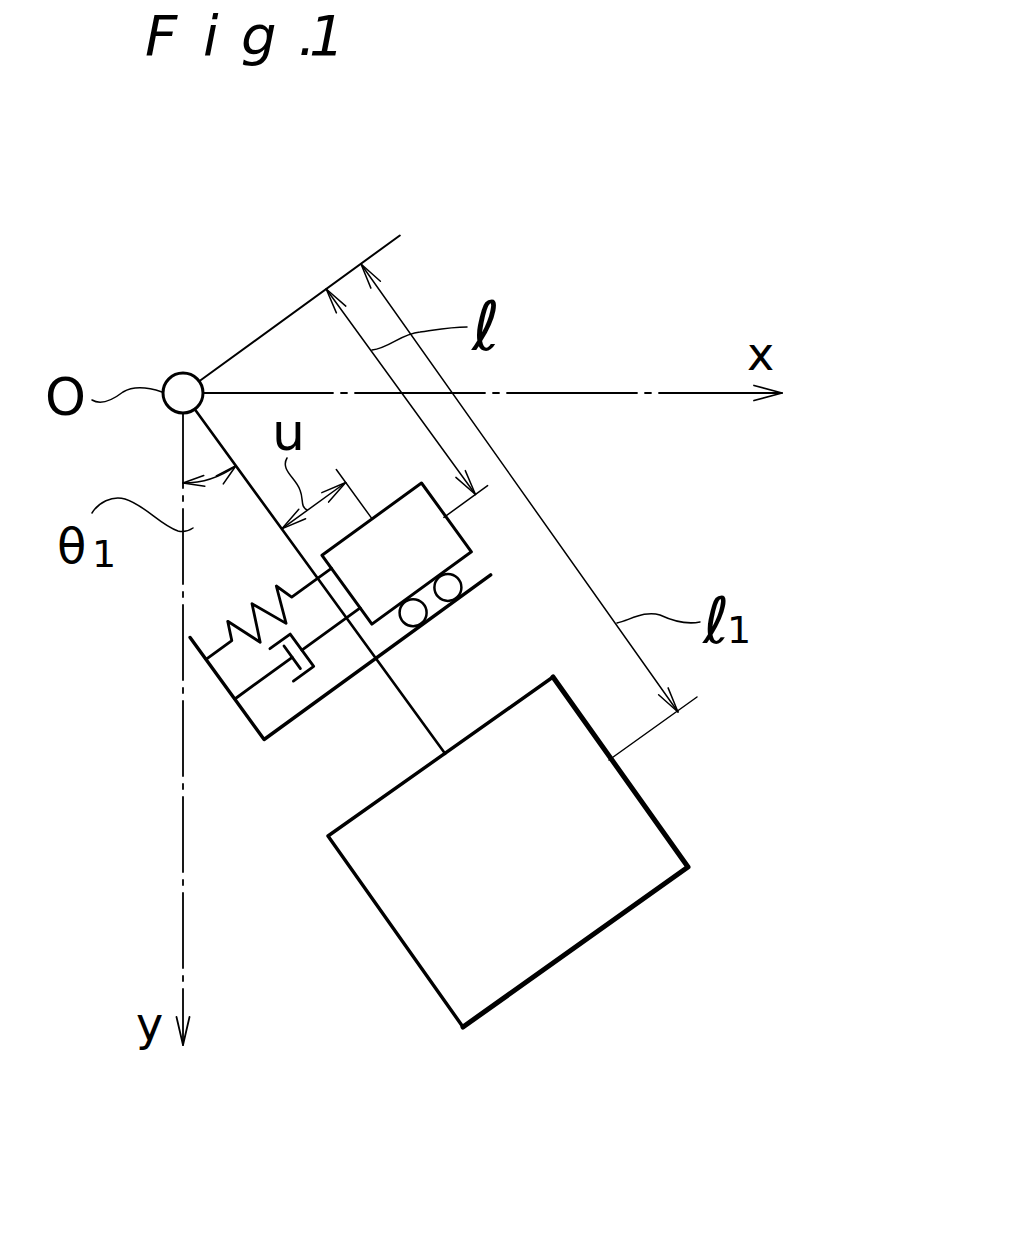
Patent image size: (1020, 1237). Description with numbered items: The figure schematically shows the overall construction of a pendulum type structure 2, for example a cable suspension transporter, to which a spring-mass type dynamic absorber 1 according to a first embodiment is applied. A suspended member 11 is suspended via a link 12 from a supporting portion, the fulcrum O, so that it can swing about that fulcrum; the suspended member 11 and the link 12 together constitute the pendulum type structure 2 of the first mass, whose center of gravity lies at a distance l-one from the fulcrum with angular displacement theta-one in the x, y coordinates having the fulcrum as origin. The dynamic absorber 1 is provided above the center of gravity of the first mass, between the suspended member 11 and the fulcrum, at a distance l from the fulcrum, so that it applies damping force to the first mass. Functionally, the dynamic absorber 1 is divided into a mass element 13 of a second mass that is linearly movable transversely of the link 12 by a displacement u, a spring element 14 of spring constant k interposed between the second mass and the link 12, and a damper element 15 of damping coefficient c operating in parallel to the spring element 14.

The dynamic absorber 1 is at (356, 603).
The pendulum type structure 2 is at (509, 718).
The suspended member 11 is at (638, 903).
The link 12 is at (407, 712).
The mass element 13 is at (458, 540).
The spring element 14 is at (258, 620).
The damper element 15 is at (283, 681).